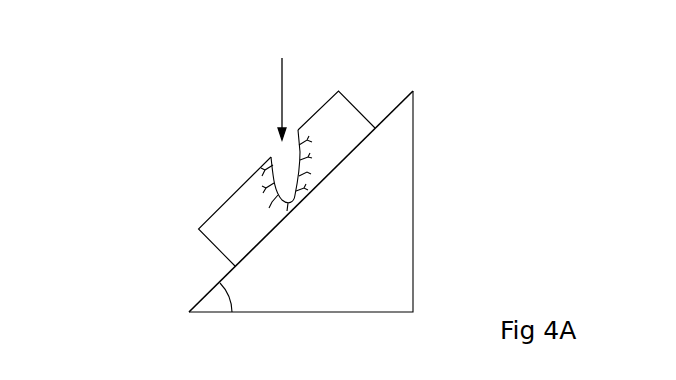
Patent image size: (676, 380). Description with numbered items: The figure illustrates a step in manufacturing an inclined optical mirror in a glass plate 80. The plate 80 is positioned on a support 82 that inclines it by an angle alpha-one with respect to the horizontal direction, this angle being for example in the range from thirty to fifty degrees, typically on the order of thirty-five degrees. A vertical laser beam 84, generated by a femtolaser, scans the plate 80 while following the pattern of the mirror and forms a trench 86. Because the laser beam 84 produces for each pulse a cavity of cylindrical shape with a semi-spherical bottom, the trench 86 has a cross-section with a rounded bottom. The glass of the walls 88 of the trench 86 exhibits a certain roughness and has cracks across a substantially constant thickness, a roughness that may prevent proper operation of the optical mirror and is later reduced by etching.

The glass plate 80 is at (213, 225).
The wedge 82 is at (400, 166).
The vertical laser beam 84 is at (282, 87).
The trench 86 is at (285, 160).
The walls 88 is at (297, 130).